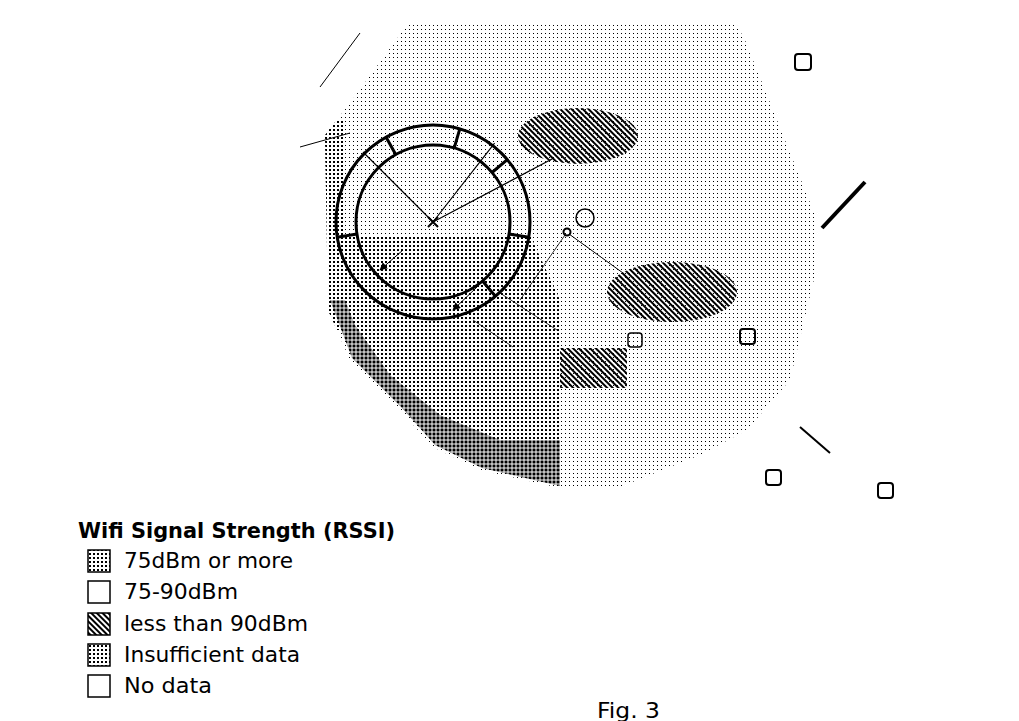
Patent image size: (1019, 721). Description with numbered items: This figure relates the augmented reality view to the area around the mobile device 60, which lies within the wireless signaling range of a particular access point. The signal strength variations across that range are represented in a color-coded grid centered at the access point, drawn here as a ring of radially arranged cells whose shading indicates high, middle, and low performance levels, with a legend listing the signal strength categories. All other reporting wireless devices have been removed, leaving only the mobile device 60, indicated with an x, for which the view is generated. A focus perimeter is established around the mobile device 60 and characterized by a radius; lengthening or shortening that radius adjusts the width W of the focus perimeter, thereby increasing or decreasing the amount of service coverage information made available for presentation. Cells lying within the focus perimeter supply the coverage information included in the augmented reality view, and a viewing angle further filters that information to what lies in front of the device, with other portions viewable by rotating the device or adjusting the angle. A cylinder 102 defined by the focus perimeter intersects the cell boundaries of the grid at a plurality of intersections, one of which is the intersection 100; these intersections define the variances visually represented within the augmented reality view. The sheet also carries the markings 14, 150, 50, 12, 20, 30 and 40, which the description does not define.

The intersection 100 is at (905, 70).
The map 14 is at (800, 128).
The signal strength region 150 is at (820, 179).
The cylinder 102 is at (345, 152).
The mobile device 60 is at (317, 197).
The ring segment 50 is at (313, 232).
The width of the focus perimeter W is at (355, 290).
The location marker 12 is at (576, 251).
The orientation marker 20 is at (525, 188).
The orientation marker 30 is at (387, 210).
The orientation marker 40 is at (439, 183).